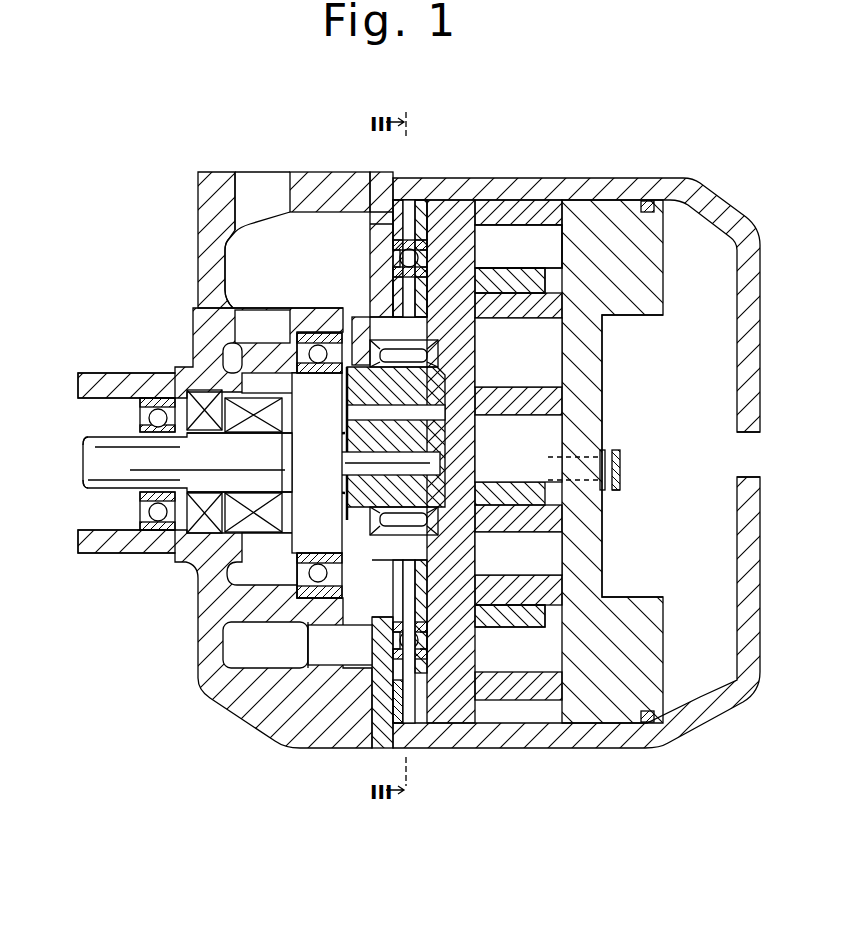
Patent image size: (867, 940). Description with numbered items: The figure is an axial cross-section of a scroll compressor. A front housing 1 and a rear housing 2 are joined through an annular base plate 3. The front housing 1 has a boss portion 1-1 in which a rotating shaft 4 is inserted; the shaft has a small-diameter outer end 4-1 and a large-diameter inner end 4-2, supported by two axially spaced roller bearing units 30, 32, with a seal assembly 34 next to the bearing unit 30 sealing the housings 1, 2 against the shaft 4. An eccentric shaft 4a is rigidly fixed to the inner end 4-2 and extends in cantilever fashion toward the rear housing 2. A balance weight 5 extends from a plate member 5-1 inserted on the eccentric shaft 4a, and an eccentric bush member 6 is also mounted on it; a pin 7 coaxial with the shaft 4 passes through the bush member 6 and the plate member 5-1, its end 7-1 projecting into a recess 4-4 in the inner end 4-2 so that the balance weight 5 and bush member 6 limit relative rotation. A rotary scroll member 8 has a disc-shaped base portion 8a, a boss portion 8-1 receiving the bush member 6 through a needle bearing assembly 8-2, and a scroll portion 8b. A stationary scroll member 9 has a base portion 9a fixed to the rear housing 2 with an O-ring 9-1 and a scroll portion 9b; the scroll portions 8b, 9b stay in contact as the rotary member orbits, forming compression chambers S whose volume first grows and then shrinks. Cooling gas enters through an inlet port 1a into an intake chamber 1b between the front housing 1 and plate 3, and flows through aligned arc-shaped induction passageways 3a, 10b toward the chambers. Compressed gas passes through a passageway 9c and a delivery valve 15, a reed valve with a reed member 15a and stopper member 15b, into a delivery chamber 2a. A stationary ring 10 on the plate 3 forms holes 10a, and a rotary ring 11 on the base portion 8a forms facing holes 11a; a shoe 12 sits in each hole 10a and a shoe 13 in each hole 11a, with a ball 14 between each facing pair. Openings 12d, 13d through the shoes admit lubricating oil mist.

The front housing 1 is at (198, 252).
The inlet port 1a is at (290, 175).
The intake chamber 1b is at (296, 269).
The boss portion 1-1 is at (100, 553).
The rear housing 2 is at (628, 190).
The delivery chamber 2a is at (714, 480).
The annular base plate 3 is at (378, 180).
The induction passageway 3a is at (375, 214).
The rotating shaft 4 is at (95, 457).
The outer end 4-1 is at (88, 488).
The inner end 4-2 is at (300, 460).
The recess 4-4 is at (285, 477).
The eccentric shaft 4a is at (475, 428).
The balance weight 5 is at (308, 638).
The plate member 5-1 is at (250, 623).
The eccentric bush member 6 is at (448, 498).
The pin 7 is at (442, 463).
The pin end 7-1 is at (282, 535).
The rotary scroll member 8 is at (487, 215).
The boss portion 8-1 is at (445, 404).
The needle bearing assembly 8-2 is at (438, 352).
The base portion 8a is at (475, 240).
The scroll portion 8b is at (535, 215).
The stationary scroll member 9 is at (665, 262).
The O-ring 9-1 is at (650, 203).
The base portion 9a is at (585, 348).
The scroll portion 9b is at (535, 395).
The passageway 9c is at (548, 468).
The stationary ring 10 is at (398, 205).
The holes 10a is at (393, 297).
The induction passageway 10b is at (395, 230).
The rotary ring 11 is at (409, 205).
The holes 11a is at (421, 205).
The shoe 12 is at (395, 250).
The opening 12d is at (395, 265).
The shoe 13 is at (475, 260).
The opening 13d is at (478, 282).
The ball 14 is at (427, 300).
The delivery valve 15 is at (622, 458).
The reed member 15a is at (604, 450).
The stopper member 15b is at (618, 490).
The roller bearing unit 30 is at (150, 512).
The roller bearing unit 32 is at (297, 573).
The seal assembly 34 is at (180, 550).
The compression chambers S is at (543, 257).